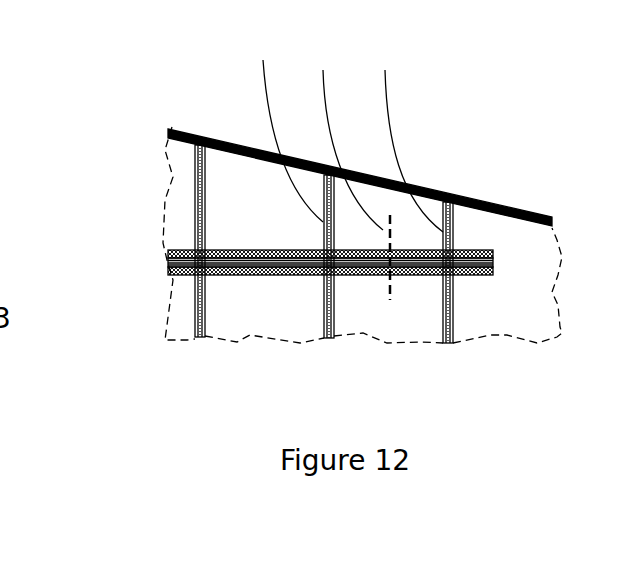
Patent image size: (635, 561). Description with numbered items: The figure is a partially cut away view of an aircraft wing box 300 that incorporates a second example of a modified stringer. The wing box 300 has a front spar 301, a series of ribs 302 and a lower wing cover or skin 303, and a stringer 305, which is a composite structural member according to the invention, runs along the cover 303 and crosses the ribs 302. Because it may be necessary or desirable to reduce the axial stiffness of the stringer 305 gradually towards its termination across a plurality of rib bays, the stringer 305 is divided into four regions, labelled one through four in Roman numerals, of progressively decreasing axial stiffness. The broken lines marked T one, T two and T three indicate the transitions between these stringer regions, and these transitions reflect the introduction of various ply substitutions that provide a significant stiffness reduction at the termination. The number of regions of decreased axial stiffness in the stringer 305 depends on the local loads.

The aircraft wing box 300 is at (438, 117).
The front spar 301 is at (507, 208).
The ribs 302 is at (198, 338).
The lower wing cover (skin) 303 is at (538, 312).
The stringer 305 is at (168, 260).